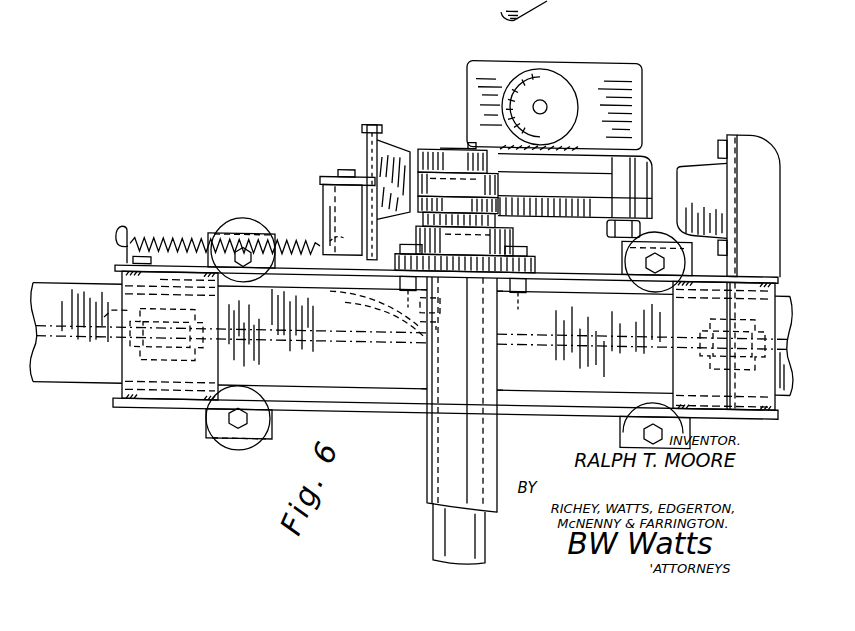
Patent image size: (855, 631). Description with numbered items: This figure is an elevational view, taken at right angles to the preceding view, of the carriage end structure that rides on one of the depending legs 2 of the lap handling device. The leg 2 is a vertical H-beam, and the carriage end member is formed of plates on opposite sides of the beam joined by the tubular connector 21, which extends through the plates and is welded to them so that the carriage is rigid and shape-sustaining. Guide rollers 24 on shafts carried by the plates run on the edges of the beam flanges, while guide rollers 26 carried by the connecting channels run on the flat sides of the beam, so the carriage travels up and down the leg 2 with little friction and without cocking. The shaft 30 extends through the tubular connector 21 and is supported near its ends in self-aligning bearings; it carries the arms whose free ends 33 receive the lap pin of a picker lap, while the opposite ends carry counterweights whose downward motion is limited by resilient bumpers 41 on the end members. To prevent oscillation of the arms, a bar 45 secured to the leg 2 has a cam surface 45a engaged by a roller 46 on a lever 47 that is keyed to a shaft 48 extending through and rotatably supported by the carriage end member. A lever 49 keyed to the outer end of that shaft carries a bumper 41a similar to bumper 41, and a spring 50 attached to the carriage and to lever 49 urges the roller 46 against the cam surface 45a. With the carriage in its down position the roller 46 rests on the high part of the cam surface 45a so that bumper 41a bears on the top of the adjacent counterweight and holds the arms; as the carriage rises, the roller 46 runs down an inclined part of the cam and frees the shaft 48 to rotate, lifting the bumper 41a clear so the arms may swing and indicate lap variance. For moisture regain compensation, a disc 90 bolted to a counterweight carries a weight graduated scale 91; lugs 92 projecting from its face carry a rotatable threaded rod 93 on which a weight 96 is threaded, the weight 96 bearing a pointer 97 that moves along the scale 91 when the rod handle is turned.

The depending legs 2 is at (67, 296).
The tubular connector 21 is at (498, 371).
The guide rollers 24 is at (236, 218).
The guide rollers 26 is at (118, 316).
The shaft 30 is at (482, 181).
The ends of arms 33 is at (553, 208).
The resilient bumpers 41 is at (700, 172).
The bumper 41a is at (386, 140).
The bar 45 is at (568, 292).
The cam surface 45a is at (156, 206).
The roller 46 is at (428, 300).
The lever 47 is at (395, 292).
The shaft 48 is at (347, 166).
The lever 49 is at (320, 174).
The spring 50 is at (162, 238).
The disc 90 is at (652, 150).
The weight graduated scale 91 is at (430, 139).
The lugs 92 is at (560, 70).
The rotatable rod 93 is at (540, 90).
The weight 96 is at (616, 89).
The pointer 97 is at (448, 134).